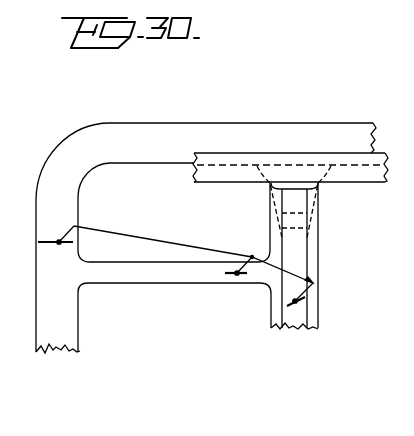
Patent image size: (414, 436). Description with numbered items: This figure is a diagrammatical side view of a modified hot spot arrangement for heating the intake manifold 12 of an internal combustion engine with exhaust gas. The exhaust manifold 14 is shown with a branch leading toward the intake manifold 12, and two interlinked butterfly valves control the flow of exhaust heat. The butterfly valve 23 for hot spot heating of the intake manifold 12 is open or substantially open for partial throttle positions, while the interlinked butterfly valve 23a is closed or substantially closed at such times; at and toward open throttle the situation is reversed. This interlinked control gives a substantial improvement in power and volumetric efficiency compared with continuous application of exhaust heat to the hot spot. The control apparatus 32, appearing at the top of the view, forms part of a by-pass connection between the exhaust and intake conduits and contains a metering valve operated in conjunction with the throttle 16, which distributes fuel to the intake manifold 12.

The exhaust manifold 14 is at (278, 123).
The intake manifold 12 is at (308, 268).
The throttle 16 is at (288, 306).
The butterfly valve 23 is at (235, 276).
The butterfly valve 23a is at (45, 242).
The control apparatus 32 is at (276, 0).